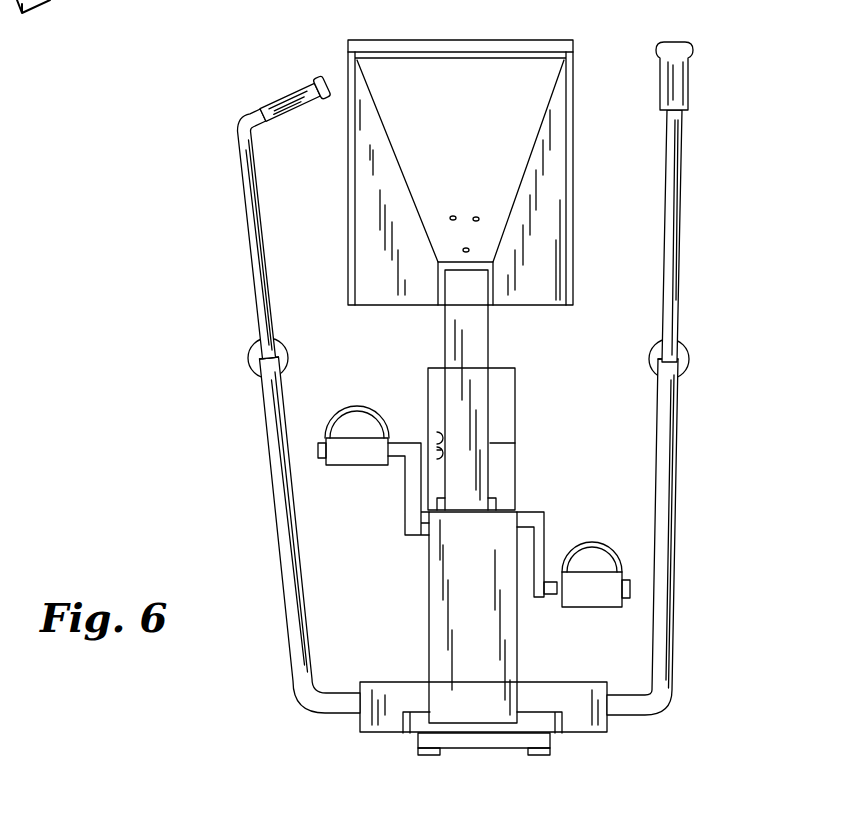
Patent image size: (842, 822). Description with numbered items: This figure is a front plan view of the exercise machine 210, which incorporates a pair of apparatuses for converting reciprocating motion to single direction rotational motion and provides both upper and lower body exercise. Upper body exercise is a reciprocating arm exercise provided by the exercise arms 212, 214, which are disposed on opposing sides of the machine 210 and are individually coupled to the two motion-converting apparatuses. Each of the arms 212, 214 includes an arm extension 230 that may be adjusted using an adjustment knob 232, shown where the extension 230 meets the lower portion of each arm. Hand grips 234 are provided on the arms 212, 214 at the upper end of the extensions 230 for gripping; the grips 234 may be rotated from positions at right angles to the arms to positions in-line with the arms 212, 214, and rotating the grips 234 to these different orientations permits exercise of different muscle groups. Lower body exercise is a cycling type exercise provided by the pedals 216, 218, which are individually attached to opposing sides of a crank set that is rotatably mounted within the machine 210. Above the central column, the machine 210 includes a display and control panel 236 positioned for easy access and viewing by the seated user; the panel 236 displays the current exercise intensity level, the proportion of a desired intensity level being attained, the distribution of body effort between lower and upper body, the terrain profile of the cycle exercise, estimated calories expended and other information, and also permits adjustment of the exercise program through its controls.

The exercise machine 210 is at (736, 52).
The exercise arm 212 is at (678, 418).
The exercise arm 214 is at (268, 475).
The pedal 216 is at (578, 608).
The pedal 218 is at (332, 467).
The arm extension 230 is at (242, 222).
The adjustment knob 232 is at (251, 353).
The hand grip 234 is at (282, 120).
The display and control panel 236 is at (528, 40).